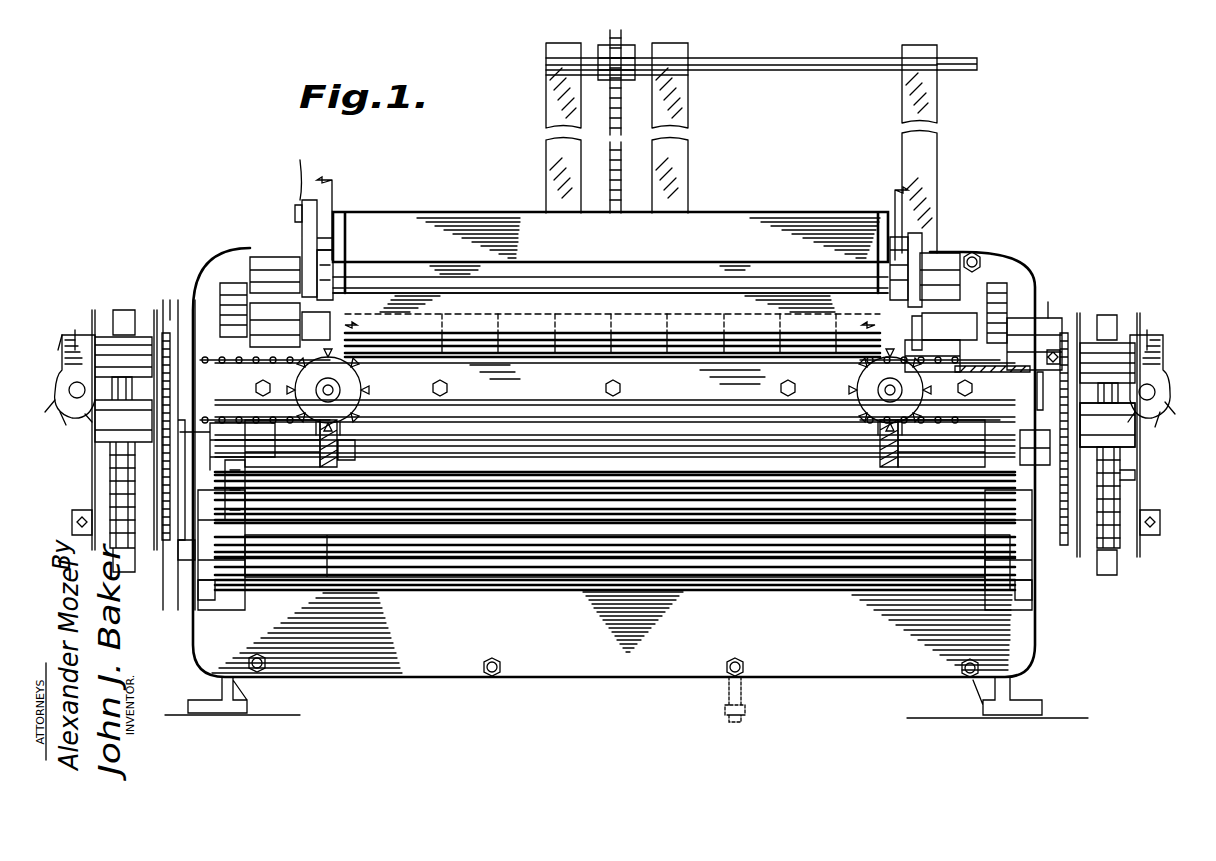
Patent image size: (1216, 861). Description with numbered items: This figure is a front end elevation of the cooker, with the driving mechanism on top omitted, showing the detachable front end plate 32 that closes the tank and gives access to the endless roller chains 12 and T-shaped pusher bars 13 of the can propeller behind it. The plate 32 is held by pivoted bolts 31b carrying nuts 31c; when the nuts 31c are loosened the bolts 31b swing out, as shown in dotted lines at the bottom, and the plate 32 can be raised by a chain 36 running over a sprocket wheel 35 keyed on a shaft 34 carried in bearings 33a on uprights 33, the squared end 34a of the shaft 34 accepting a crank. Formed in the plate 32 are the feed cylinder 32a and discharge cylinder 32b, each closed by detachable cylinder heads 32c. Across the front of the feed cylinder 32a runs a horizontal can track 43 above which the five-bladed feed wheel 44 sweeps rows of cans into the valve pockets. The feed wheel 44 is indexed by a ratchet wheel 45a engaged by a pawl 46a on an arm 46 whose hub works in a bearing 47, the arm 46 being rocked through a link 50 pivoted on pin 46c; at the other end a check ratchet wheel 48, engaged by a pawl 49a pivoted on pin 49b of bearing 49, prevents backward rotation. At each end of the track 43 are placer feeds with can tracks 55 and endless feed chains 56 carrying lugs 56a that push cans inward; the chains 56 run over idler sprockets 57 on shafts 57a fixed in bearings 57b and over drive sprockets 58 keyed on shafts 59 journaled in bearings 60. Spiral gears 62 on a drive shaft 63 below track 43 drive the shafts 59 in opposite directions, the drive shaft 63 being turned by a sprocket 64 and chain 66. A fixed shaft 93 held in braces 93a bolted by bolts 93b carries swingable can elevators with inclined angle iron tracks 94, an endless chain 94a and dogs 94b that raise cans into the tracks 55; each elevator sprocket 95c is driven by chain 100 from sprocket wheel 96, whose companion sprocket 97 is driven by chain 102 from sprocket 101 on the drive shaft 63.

The endless roller chains 12 is at (333, 180).
The T-shaped pusher bars 13 is at (895, 190).
The bolts 31b is at (265, 670).
The nuts 31c is at (500, 660).
The front end plate 32 is at (1010, 272).
The feed cylinder 32a is at (545, 408).
The discharge cylinder 32b is at (495, 520).
The cylinder heads 32c is at (222, 285).
The uprights 33 is at (560, 175).
The bearings 33a is at (565, 52).
The shaft 34 is at (795, 70).
The squared shaft end 34a is at (968, 70).
The sprocket wheel 35 is at (625, 50).
The chain 36 is at (624, 158).
The horizontal can track 43 is at (670, 362).
The feed wheel 44 is at (470, 215).
The ratchet wheel 45a is at (335, 292).
The arm 46 is at (318, 205).
The pawl 46a is at (325, 262).
The pin 46c is at (296, 210).
The bearing 47 is at (272, 265).
The check ratchet wheel 48 is at (980, 258).
The bearing 49 is at (945, 265).
The pawl 49a is at (890, 248).
The pin 49b is at (922, 240).
The link 50 is at (300, 180).
The can tracks 55 is at (215, 360).
The endless feed chains 56 is at (362, 383).
The lugs 56a is at (290, 468).
The idler sprockets 57 is at (58, 368).
The shafts 57a is at (76, 330).
The bearings 57b is at (100, 318).
The drive sprockets 58 is at (370, 408).
The shafts 59 is at (412, 328).
The bearings 60 is at (944, 331).
The spiral gears 62 is at (332, 470).
The drive shaft 63 is at (560, 478).
The sprocket 64 is at (1030, 478).
The chain 66 is at (1070, 407).
The shaft 93 is at (690, 522).
The braces 93a is at (320, 535).
The bolts 93b is at (200, 605).
The inclined angle iron tracks 94 is at (108, 478).
The endless chain 94a is at (1135, 480).
The dogs 94b is at (1108, 385).
The sprocket 95c is at (1095, 300).
The sprocket wheel 96 is at (165, 545).
The sprocket 97 is at (180, 552).
The chain 100 is at (178, 398).
The sprocket 101 is at (275, 436).
The chain 102 is at (200, 496).